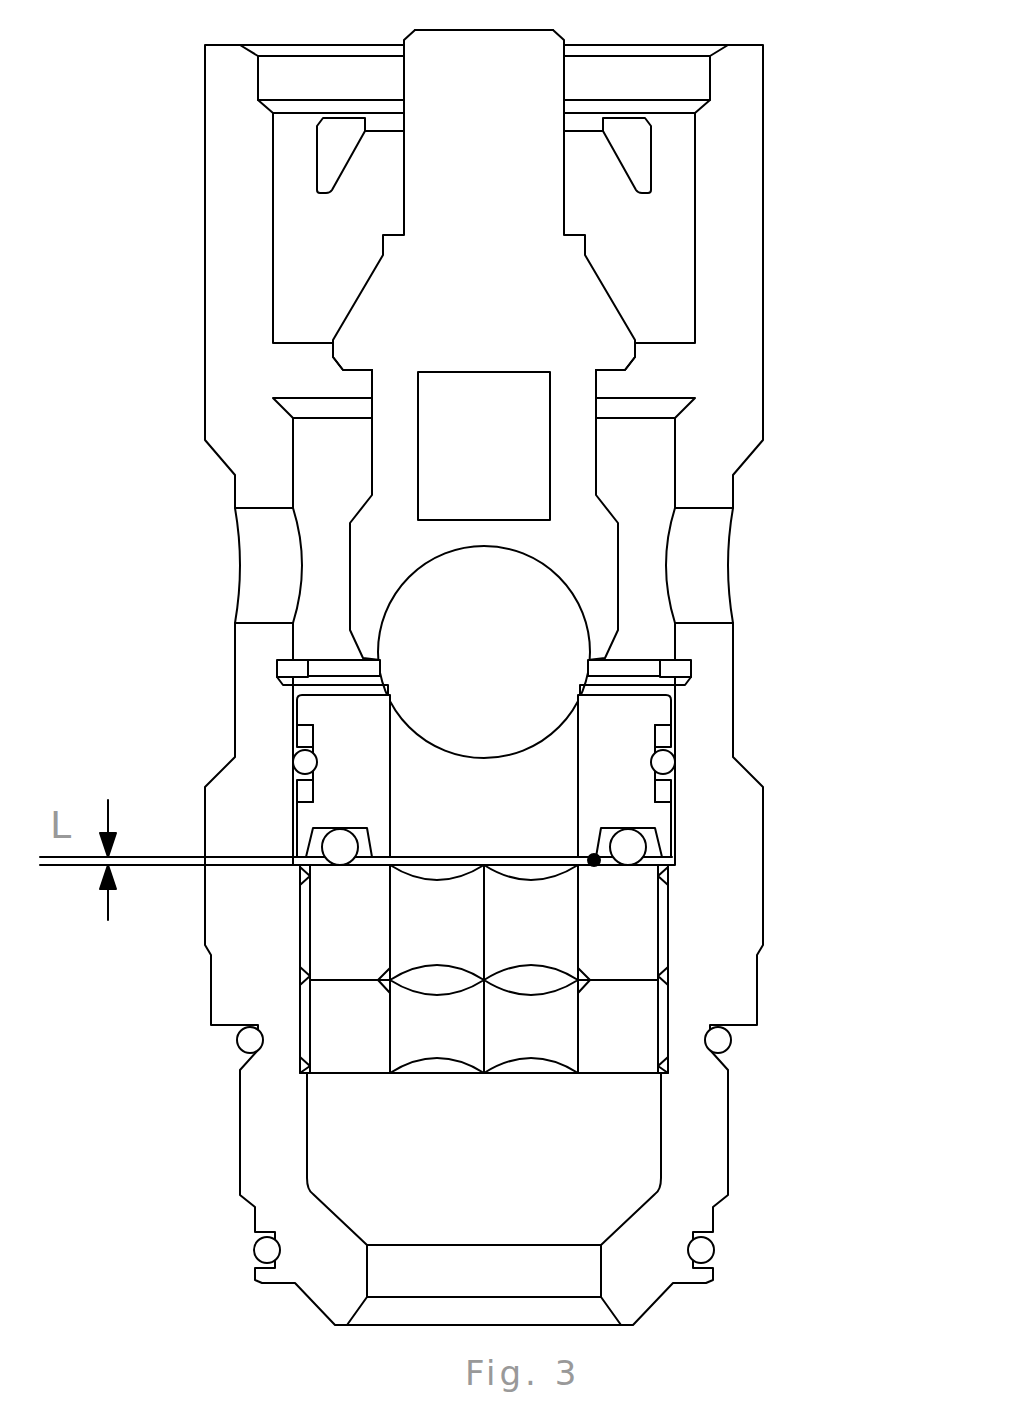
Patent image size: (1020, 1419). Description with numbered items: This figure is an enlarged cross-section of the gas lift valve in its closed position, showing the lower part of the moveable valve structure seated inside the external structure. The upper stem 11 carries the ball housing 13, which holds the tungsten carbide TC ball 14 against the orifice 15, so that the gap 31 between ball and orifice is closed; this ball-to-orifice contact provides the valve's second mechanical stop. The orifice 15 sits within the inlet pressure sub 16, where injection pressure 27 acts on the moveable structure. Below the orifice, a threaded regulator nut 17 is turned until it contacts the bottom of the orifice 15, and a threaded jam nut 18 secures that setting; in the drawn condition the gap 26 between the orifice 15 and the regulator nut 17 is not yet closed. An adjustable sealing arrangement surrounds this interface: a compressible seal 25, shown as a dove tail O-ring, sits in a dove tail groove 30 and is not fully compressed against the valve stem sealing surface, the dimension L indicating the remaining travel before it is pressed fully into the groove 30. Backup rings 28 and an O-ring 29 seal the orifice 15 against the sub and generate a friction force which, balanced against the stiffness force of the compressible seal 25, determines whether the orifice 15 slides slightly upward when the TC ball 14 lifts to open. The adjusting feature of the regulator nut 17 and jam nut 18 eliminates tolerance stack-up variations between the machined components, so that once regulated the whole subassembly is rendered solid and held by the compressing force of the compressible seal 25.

The upper stem 11 is at (565, 167).
The ball housing 13 is at (618, 522).
The TC ball 14 is at (590, 615).
The orifice 15 is at (647, 682).
The inlet pressure sub 16 is at (765, 205).
The threaded regulator nut 17 is at (668, 925).
The threaded jam nut 18 is at (668, 1010).
The compressible seal 25 is at (318, 832).
The gap 26 is at (675, 748).
The injection pressure 27 is at (273, 573).
The backup rings 28 is at (297, 725).
The O-Ring 29 is at (668, 725).
The dove tail groove 30 is at (330, 827).
The gap 31 is at (388, 697).